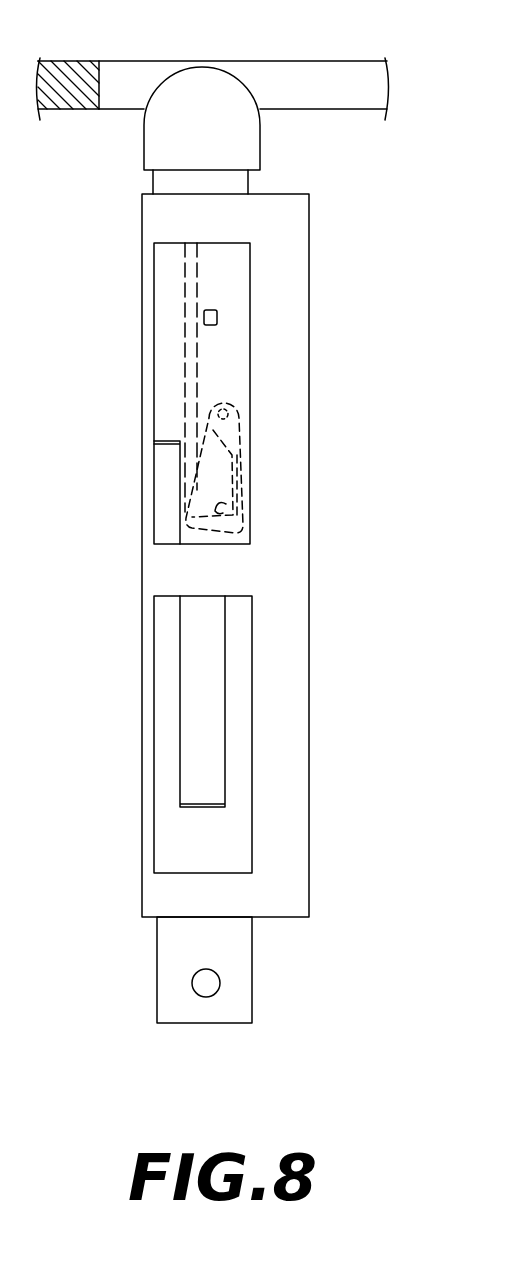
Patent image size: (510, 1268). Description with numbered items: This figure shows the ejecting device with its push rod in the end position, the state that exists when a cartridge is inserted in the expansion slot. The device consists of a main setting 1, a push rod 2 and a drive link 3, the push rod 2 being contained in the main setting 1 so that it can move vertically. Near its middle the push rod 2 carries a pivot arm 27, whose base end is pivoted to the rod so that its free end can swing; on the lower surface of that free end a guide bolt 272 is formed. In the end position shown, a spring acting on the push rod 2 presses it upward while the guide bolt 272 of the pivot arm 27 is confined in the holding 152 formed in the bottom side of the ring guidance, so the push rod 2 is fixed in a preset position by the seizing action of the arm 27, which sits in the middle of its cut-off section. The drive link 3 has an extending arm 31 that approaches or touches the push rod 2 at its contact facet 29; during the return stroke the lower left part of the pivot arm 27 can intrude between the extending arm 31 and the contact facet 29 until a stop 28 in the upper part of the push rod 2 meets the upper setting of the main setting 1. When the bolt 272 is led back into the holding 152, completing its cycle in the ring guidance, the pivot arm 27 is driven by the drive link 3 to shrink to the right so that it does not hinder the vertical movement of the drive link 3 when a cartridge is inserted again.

The main setting 1 is at (300, 288).
The push rod 2 is at (200, 77).
The drive link 3 is at (170, 943).
The pivot arm 27 is at (242, 418).
The stop 28 is at (204, 315).
The contact facet 29 is at (167, 440).
The extending arm 31 is at (131, 484).
The holding 152 is at (217, 508).
The guide bolt 272 is at (304, 545).